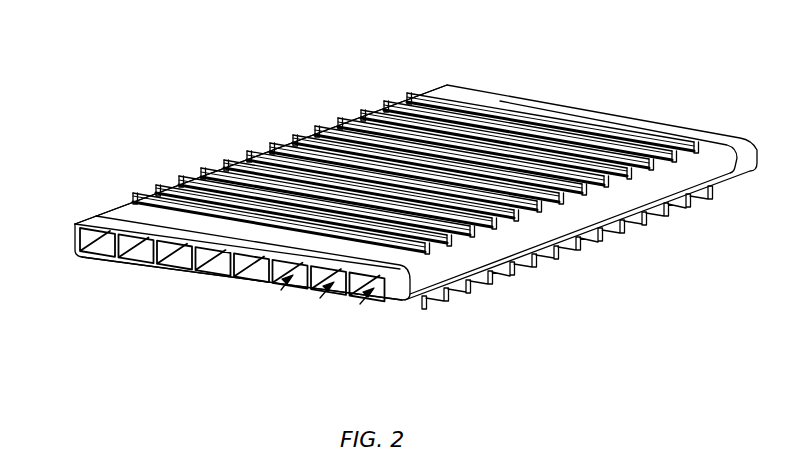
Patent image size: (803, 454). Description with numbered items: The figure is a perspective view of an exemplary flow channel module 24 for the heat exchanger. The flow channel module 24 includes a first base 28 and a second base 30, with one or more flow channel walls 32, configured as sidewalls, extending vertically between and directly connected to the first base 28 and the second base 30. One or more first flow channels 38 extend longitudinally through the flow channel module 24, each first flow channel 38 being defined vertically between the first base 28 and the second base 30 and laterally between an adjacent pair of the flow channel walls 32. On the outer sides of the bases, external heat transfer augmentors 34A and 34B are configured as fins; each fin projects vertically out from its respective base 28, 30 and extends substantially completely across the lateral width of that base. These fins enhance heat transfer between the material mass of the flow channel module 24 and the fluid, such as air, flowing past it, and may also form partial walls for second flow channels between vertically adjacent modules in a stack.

The flow channel module 24 is at (628, 82).
The first base 28 is at (103, 226).
The second base 30 is at (95, 258).
The flow channel walls 32 is at (73, 240).
The external heat transfer augmentor 34A is at (406, 92).
The external heat transfer augmentor 34B is at (547, 260).
The first flow channels 38 is at (281, 290).